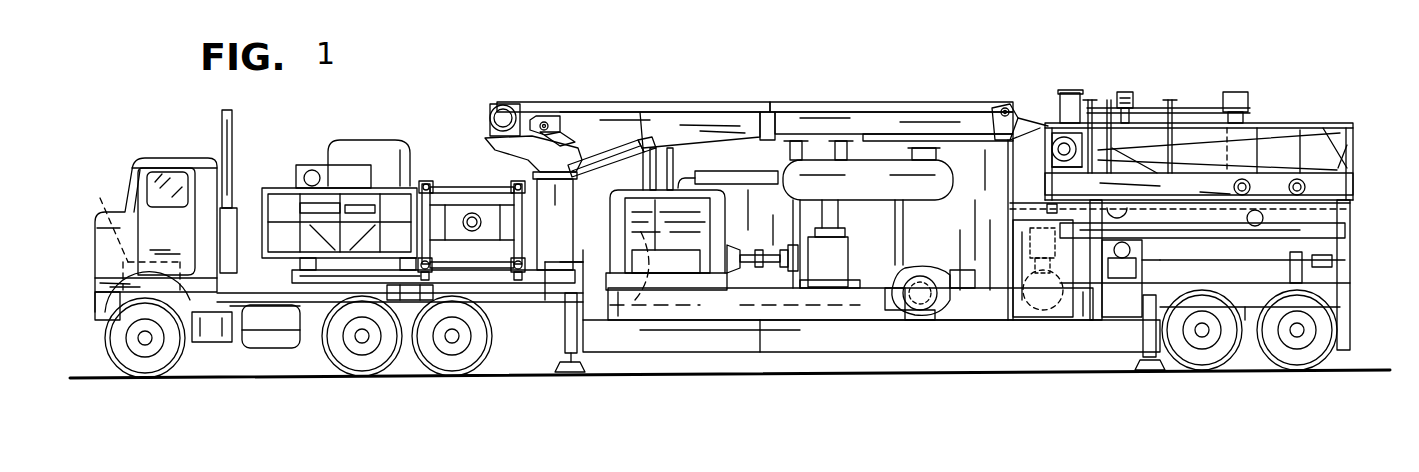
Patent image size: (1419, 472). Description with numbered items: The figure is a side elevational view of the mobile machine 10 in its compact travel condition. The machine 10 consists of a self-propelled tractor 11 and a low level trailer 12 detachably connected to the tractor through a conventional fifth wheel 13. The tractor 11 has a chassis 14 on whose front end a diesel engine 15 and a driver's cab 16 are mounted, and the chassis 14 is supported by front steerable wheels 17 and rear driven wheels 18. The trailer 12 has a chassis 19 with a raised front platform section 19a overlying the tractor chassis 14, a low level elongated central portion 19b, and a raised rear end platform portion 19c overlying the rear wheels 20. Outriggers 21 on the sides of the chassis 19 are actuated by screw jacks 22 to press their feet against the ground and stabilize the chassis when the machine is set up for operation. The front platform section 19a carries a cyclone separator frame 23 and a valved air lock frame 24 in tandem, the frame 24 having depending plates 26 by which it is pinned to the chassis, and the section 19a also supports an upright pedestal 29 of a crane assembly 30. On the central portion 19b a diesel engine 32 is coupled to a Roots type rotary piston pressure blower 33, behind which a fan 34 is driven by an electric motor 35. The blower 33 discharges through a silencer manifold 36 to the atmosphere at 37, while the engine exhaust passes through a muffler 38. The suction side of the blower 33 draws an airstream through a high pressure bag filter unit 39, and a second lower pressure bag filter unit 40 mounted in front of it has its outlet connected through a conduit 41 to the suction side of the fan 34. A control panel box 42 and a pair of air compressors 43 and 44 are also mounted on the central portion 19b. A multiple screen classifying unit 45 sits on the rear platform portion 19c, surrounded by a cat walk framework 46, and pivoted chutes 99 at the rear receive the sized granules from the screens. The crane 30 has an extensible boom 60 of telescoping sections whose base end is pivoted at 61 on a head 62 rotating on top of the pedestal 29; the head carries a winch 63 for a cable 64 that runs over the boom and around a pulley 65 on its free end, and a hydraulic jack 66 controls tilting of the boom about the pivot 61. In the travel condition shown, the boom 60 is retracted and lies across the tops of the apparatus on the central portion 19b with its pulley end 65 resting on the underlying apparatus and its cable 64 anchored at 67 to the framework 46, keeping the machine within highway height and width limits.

The mobile machine 10 is at (1290, 106).
The self-propelled tractor 11 is at (166, 152).
The low level trailer 12 is at (744, 335).
The fifth wheel 13 is at (390, 297).
The chassis 14 is at (318, 312).
The diesel engine 15 is at (100, 198).
The driver's cab 16 is at (186, 216).
The front steerable wheels 17 is at (160, 358).
The rear driven wheels 18 is at (440, 357).
The chassis 19 is at (688, 330).
The raised front platform section 19a is at (538, 295).
The low level elongated central portion 19b is at (782, 342).
The raised rear end platform portion 19c is at (1250, 308).
The rear wheels 20 is at (1208, 355).
The outriggers 21 is at (583, 345).
The screw jacks 22 is at (1150, 335).
The cyclone separator frame 23 is at (388, 188).
The valved air lock frame 24 is at (455, 185).
The plates 26 is at (432, 278).
The upright pedestal 29 is at (555, 221).
The crane assembly 30 is at (655, 98).
The diesel engine 32 is at (700, 251).
The rotary piston pressure blower 33 is at (835, 285).
The fan 34 is at (945, 272).
The electric motor 35 is at (925, 312).
The silencer manifold 36 is at (880, 186).
The atmosphere discharge 37 is at (925, 162).
The muffler 38 is at (752, 186).
The high pressure bag filter unit 39 is at (928, 259).
The lower pressure bag filter unit 40 is at (748, 178).
The conduit 41 is at (888, 310).
The control panel box 42 is at (1025, 320).
The air compressor 43 is at (1050, 320).
The air compressor 44 is at (1110, 300).
The multiple screen classifying unit 45 is at (1330, 188).
The cat walk framework 46 is at (1360, 130).
The extensible boom 60 is at (730, 118).
The pivot 61 is at (546, 122).
The head 62 is at (540, 122).
The winch 63 is at (500, 105).
The cable 64 is at (800, 104).
The pulley 65 is at (1000, 108).
The hydraulic jack 66 is at (625, 150).
The cable anchor 67 is at (1030, 122).
The chute 99 is at (1236, 235).